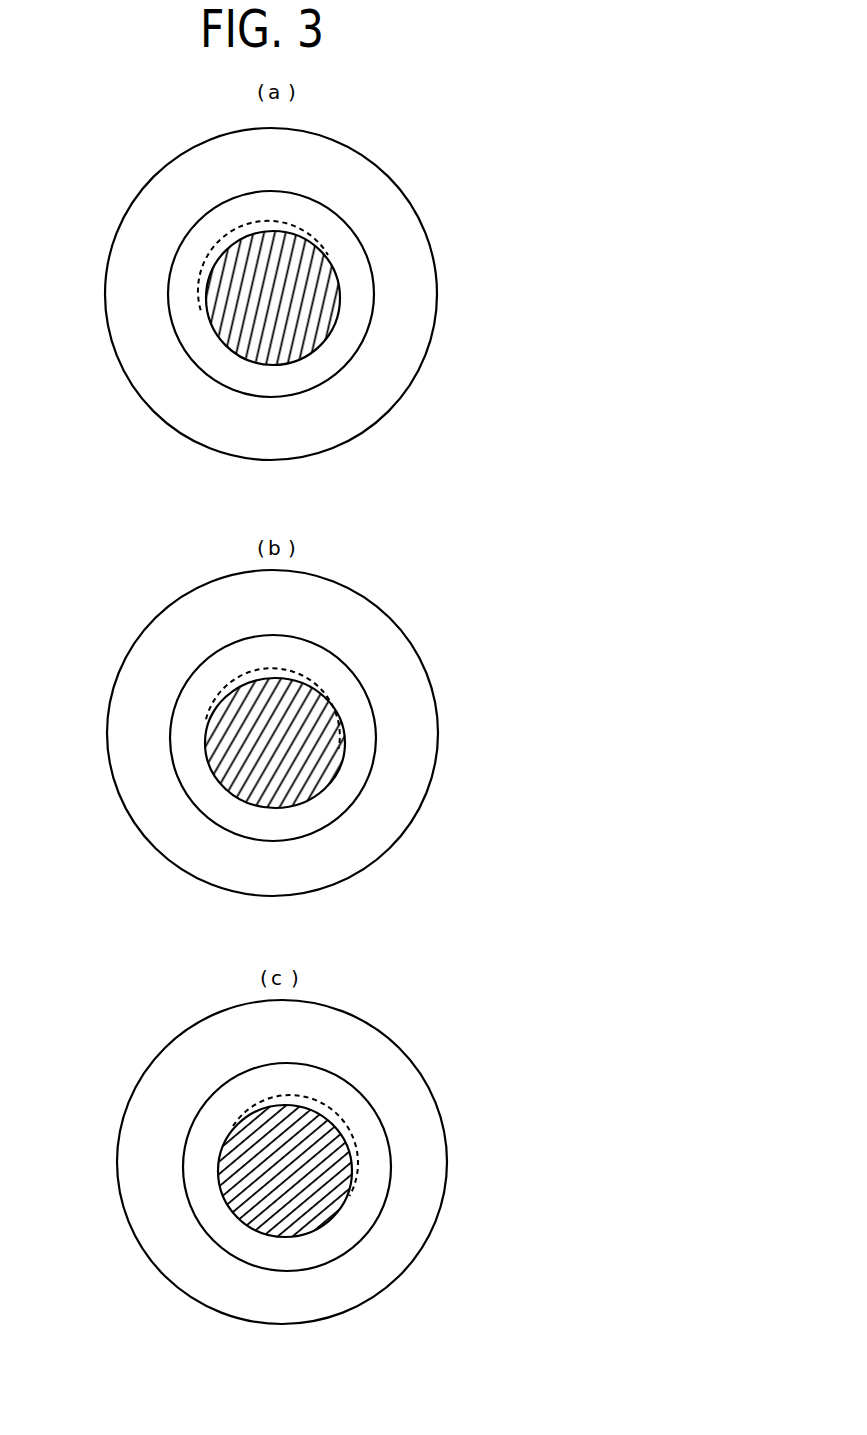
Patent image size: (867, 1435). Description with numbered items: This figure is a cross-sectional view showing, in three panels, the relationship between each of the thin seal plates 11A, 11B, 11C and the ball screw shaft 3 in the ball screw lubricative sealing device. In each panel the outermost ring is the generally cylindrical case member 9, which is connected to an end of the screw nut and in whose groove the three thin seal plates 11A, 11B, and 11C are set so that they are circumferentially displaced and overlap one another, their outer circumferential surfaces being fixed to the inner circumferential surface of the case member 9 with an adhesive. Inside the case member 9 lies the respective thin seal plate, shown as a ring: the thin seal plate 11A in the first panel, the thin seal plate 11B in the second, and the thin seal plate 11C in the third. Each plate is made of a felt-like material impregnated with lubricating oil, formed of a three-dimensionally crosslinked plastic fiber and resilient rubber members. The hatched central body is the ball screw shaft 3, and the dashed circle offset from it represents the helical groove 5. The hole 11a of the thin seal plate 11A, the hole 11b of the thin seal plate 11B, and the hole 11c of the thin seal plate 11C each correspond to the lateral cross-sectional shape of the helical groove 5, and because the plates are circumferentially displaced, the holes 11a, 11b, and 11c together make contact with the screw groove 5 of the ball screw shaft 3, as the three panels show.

The ball screw shaft 3 is at (227, 305).
The helical groove 5 is at (251, 235).
The case member 9 is at (373, 192).
The thin seal plate 11A is at (353, 300).
The thin seal plate 11B is at (363, 730).
The thin seal plate 11C is at (375, 1180).
The hole 11a is at (283, 363).
The hole 11b is at (238, 800).
The hole 11c is at (260, 1227).